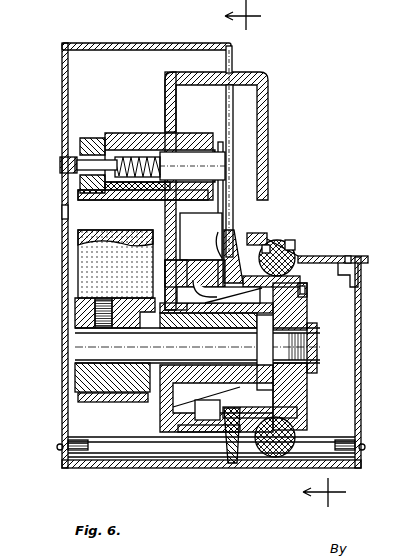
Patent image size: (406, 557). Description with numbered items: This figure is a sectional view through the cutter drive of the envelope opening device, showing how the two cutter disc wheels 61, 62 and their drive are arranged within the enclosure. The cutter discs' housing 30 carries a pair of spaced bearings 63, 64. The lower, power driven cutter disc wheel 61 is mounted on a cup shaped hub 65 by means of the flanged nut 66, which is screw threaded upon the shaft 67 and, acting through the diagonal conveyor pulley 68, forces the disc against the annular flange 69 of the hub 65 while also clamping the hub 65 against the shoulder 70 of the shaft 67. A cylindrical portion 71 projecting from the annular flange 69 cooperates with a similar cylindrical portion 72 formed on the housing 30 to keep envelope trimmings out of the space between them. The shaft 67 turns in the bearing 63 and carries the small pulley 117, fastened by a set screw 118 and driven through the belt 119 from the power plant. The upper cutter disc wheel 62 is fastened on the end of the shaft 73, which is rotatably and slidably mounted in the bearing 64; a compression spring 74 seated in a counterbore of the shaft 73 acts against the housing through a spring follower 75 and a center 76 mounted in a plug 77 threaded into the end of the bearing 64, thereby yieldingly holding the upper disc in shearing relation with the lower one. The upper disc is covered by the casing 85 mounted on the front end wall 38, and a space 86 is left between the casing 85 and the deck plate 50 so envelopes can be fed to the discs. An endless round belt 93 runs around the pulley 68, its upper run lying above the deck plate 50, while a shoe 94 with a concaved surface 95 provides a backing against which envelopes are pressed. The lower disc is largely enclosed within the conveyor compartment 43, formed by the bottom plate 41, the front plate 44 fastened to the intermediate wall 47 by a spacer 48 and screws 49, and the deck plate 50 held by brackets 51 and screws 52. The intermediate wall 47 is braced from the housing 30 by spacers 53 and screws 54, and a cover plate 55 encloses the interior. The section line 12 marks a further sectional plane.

The section line 12 is at (296, 253).
The cutter discs' housing 30 is at (168, 90).
The front end wall 38 is at (233, 58).
The bottom plate 41 is at (193, 467).
The conveyor compartment 43 is at (72, 425).
The plate 44 is at (363, 407).
The intermediate wall 47 is at (62, 418).
The spacer 48 is at (105, 447).
The screws 49 is at (58, 448).
The deck plate 50 is at (358, 256).
The brackets 51 is at (360, 275).
The screws 52 is at (350, 256).
The spacers 53 is at (78, 187).
The screws 54 is at (70, 163).
The cover plate 55 is at (157, 30).
The lower cutter disc wheel 61 is at (245, 420).
The upper cutter disc wheel 62 is at (225, 112).
The bearing 63 is at (167, 407).
The bearing 64 is at (152, 133).
The hub 65 is at (298, 298).
The flanged nut 66 is at (303, 307).
The shaft 67 is at (88, 350).
The diagonal conveyor pulley 68 is at (297, 423).
The annular flange 69 is at (220, 297).
The shoulder 70 is at (265, 305).
The cylindrical portion 71 is at (212, 258).
The cylindrical portion 72 is at (196, 255).
The shaft 73 is at (193, 160).
The compression spring 74 is at (145, 197).
The spring follower 75 is at (118, 197).
The center 76 is at (96, 197).
The plug 77 is at (63, 212).
The casing 85 is at (268, 130).
The space 86 is at (262, 233).
The endless round belt 93 is at (292, 248).
The shoe 94 is at (270, 240).
The concaved surface 95 is at (295, 244).
The small pulley 117 is at (80, 378).
The set screw 118 is at (97, 313).
The belt 119 is at (90, 282).